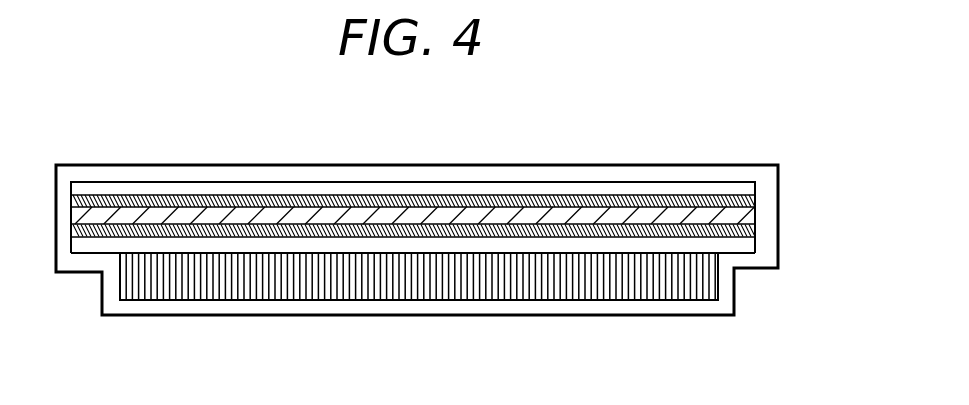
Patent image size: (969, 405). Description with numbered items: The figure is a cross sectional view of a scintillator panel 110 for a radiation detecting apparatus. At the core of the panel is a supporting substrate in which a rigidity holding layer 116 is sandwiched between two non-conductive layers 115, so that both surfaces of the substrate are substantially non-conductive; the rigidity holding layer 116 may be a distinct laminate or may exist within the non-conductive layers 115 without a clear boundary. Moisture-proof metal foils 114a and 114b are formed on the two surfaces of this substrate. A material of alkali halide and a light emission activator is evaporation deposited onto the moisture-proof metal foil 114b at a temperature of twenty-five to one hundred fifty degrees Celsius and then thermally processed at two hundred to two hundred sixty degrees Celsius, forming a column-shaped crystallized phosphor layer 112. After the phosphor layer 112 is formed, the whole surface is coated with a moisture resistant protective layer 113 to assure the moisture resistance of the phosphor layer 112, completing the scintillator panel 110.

The scintillator panel 110 is at (467, 249).
The phosphor layer 112 is at (142, 285).
The moisture resistant protective layer 113 is at (535, 307).
The moisture-proof metal foil 114a is at (190, 188).
The moisture-proof metal foil 114b is at (740, 243).
The non-conductive layers 115 is at (377, 197).
The rigidity holding layer 116 is at (753, 214).